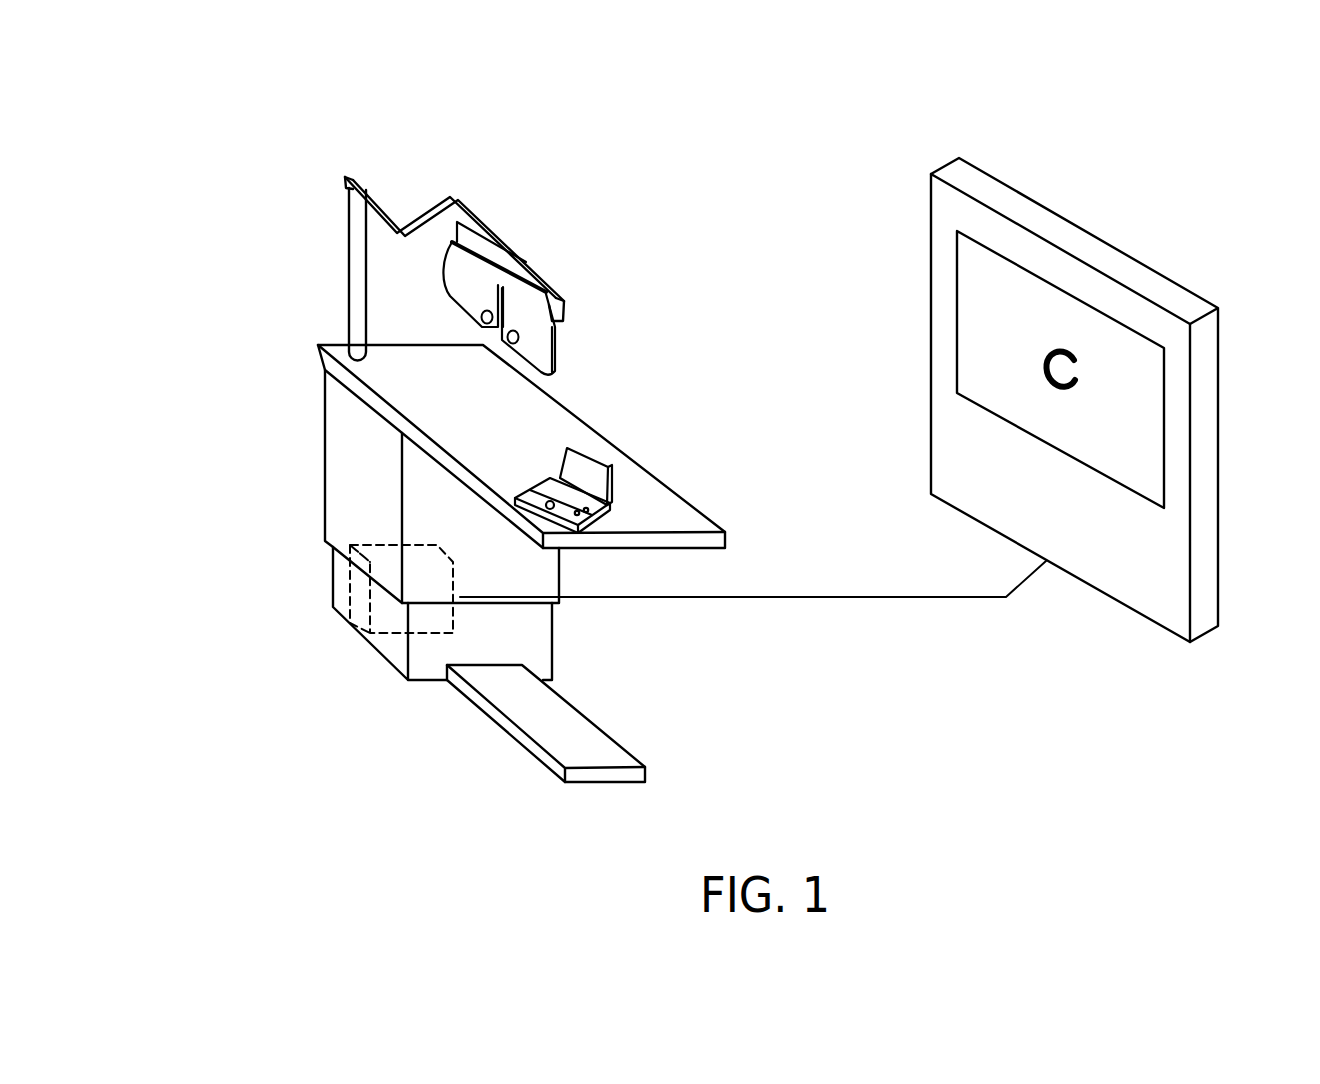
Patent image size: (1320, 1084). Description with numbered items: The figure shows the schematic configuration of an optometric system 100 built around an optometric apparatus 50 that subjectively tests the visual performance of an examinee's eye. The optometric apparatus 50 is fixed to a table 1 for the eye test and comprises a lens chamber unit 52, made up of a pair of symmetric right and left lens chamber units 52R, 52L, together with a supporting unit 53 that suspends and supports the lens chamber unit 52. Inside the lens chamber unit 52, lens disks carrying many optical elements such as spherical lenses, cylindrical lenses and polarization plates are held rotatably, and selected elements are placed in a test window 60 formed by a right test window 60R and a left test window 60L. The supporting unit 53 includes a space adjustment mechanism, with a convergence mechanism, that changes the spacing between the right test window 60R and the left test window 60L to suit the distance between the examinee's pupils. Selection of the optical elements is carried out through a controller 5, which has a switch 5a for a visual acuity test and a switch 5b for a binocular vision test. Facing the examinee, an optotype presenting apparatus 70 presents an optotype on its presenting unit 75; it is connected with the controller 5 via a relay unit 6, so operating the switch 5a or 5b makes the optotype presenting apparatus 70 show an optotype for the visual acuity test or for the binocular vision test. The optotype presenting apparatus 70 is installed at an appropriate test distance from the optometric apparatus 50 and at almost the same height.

The optometric system 100 is at (822, 147).
The table 1 is at (337, 513).
The controller 5 is at (527, 463).
The switch for a visual acuity test 5a is at (612, 506).
The switch for a binocular vision test 5b is at (585, 525).
The relay unit 6 is at (365, 595).
The optometric apparatus 50 is at (640, 214).
The lens chamber unit 52 is at (594, 301).
The left lens chamber unit 52L is at (457, 262).
The right lens chamber unit 52R is at (562, 348).
The supporting unit 53 is at (497, 222).
The test window 60 is at (252, 237).
The right test window 60R is at (481, 316).
The left test window 60L is at (507, 337).
The optotype presenting apparatus 70 is at (870, 216).
The presenting unit 75 is at (994, 308).